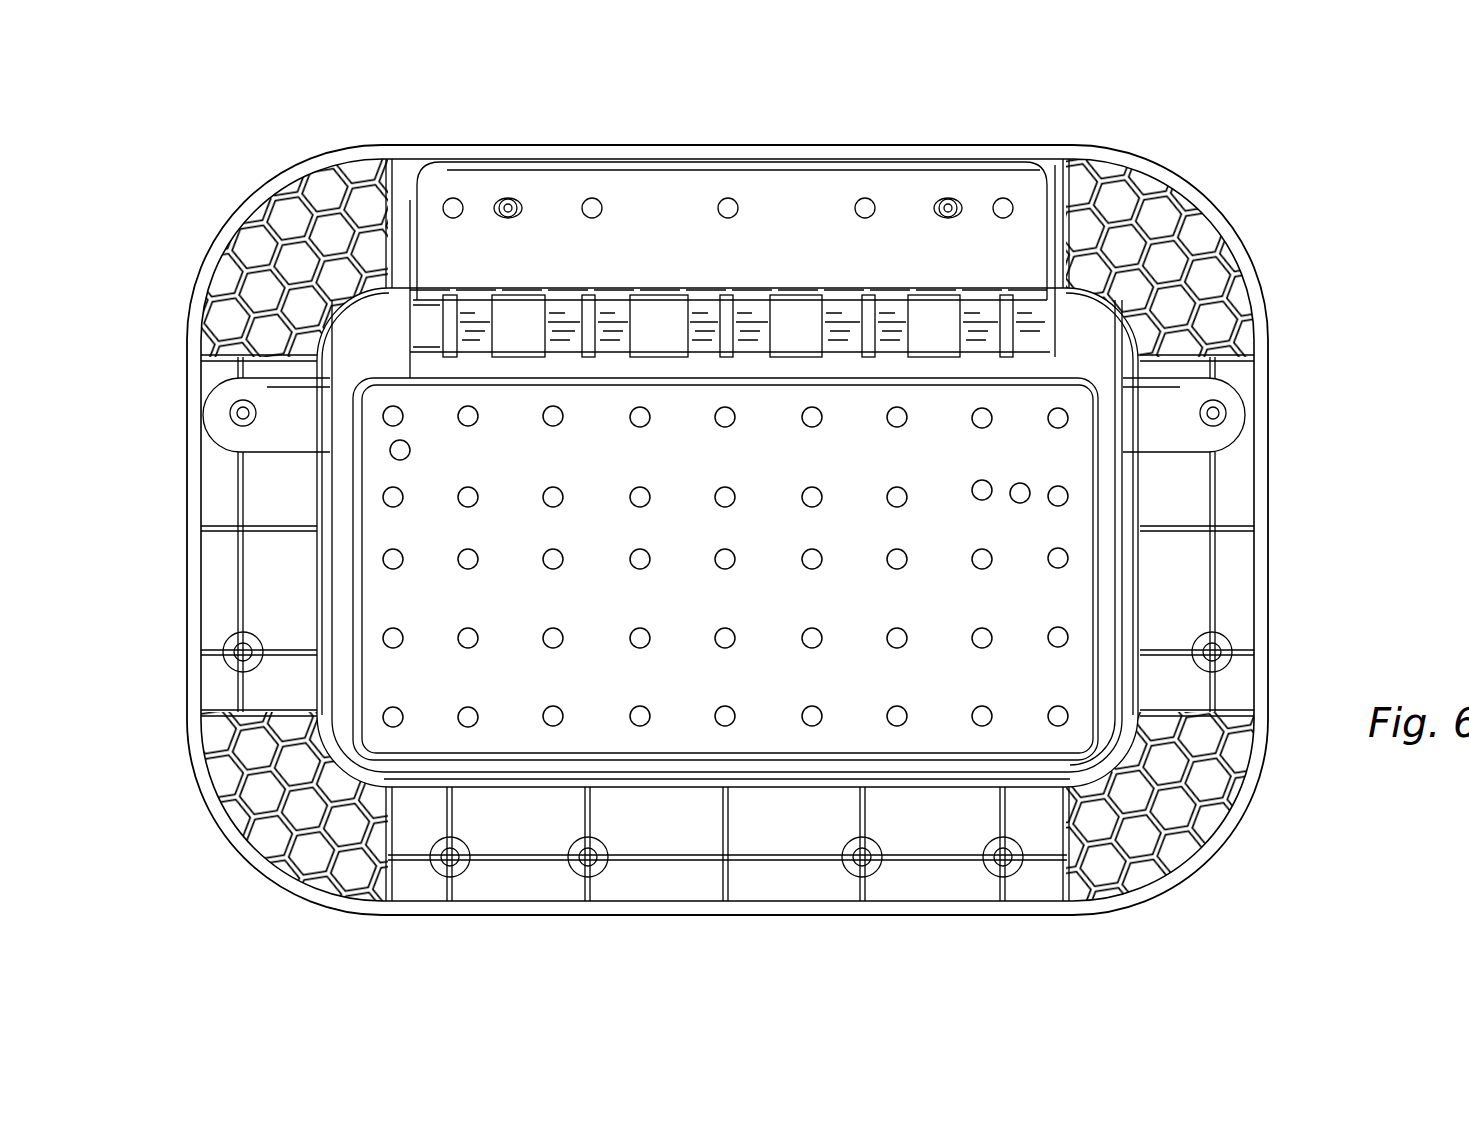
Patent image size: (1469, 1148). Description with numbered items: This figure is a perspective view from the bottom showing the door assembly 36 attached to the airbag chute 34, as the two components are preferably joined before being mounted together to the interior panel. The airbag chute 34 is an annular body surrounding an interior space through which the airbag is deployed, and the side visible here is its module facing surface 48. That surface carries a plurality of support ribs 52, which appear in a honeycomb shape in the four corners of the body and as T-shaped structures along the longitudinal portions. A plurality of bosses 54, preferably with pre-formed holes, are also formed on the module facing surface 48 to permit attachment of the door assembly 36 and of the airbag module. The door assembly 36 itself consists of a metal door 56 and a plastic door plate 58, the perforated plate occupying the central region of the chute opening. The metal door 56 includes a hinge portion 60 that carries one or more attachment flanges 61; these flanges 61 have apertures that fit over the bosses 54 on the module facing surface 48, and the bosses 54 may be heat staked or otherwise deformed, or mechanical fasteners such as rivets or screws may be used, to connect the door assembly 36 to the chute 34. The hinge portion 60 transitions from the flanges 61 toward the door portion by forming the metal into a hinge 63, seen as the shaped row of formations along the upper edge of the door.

The airbag chute 34 is at (1207, 277).
The door assembly 36 is at (1070, 325).
The module facing surface 48 is at (1243, 790).
The support ribs 52 is at (348, 220).
The bosses 54 is at (508, 200).
The metal door 56 is at (1123, 317).
The plastic door plate 58 is at (1098, 750).
The hinge portion 60 is at (982, 275).
The attachment flanges 61 is at (838, 215).
The hinge 63 is at (748, 300).